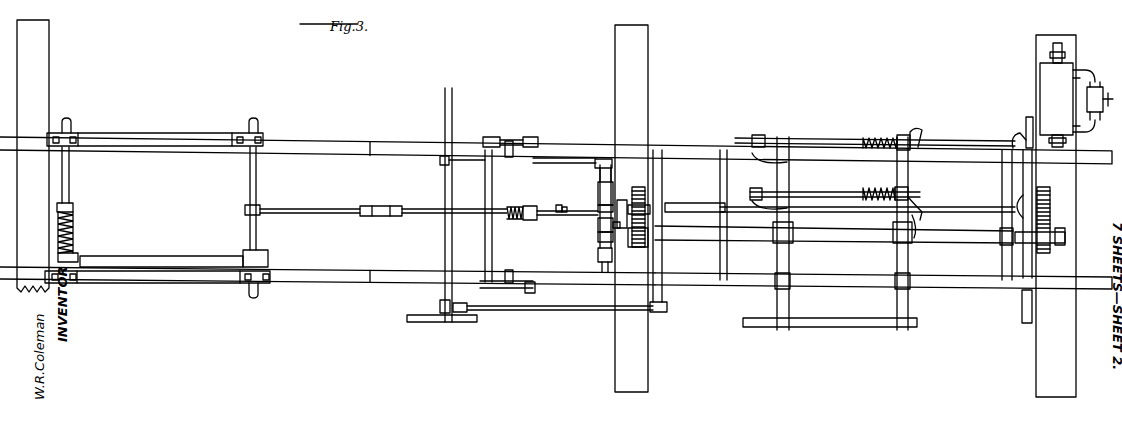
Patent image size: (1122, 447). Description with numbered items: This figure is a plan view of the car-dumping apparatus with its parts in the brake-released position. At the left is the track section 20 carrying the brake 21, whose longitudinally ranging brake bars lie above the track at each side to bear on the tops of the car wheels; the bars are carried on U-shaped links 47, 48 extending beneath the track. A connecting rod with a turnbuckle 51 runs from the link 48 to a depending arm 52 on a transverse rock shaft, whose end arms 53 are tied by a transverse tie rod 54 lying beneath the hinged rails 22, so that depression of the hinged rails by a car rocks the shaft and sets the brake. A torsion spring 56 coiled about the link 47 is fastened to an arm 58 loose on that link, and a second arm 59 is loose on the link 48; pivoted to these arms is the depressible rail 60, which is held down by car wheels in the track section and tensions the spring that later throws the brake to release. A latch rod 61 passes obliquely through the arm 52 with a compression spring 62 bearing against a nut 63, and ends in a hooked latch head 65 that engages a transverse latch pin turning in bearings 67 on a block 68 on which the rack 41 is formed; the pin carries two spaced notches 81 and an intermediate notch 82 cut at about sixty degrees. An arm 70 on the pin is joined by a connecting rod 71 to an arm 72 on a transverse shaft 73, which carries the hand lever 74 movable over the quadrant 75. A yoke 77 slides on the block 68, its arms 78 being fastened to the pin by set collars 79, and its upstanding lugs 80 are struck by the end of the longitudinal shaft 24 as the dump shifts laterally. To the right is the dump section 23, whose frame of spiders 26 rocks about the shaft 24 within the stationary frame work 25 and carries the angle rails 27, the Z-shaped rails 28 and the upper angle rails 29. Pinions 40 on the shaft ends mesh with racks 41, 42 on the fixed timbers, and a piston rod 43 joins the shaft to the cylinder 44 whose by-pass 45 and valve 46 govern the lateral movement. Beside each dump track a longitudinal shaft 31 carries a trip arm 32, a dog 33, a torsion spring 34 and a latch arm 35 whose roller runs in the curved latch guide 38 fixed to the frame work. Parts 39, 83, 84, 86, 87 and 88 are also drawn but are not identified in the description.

The track section 20 is at (311, 147).
The brake 21 is at (165, 137).
The hinged rails 22 is at (383, 143).
The dump section 23 is at (765, 212).
The longitudinal shaft 24 is at (690, 240).
The frame work 25 is at (648, 58).
The spiders 26 is at (777, 254).
The angle rails 27 is at (678, 287).
The double-flanged or Z-shaped rails 28 is at (677, 150).
The additional angle rails 29 is at (782, 137).
The longitudinal shaft 31 is at (815, 142).
The trip arm 32 is at (768, 163).
The dog 33 is at (922, 139).
The torsion spring 34 is at (1014, 137).
The latch arm 35 is at (1052, 214).
The curved latch guide 38 is at (1024, 320).
The spring 39 is at (864, 139).
The pinions 40 is at (638, 248).
The rack 41 is at (640, 187).
The rack 42 is at (1035, 193).
The piston rod 43 is at (1003, 179).
The cylinder 44 is at (1056, 95).
The by-pass 45 is at (1092, 131).
The valve 46 is at (1087, 94).
The U-shaped link 47 is at (73, 193).
The U-shaped link 48 is at (72, 130).
The turnbuckle 51 is at (81, 203).
The depending arm 52 is at (556, 208).
The fixed arms 53 is at (522, 137).
The transverse tie rod 54 is at (485, 232).
The torsion spring 56 is at (75, 229).
The arm 58 is at (90, 253).
The second arm 59 is at (261, 251).
The depressible rail 60 is at (164, 256).
The latch rod 61 is at (560, 203).
The compression spring 62 is at (522, 220).
The nut 63 is at (509, 207).
The latch head 65 is at (592, 213).
The bearings 67 is at (596, 161).
The block or casting 68 is at (614, 180).
The arm 70 is at (606, 163).
The connecting rod 71 is at (549, 158).
The arm 72 is at (440, 161).
The transverse shaft 73 is at (453, 194).
The hand lever 74 is at (440, 307).
The quadrant 75 is at (445, 322).
The yoke 77 is at (649, 207).
The arms 78 is at (598, 191).
The set collars 79 is at (598, 208).
The upstanding lugs 80 is at (622, 250).
The notches 81 is at (612, 226).
The intermediate notch 82 is at (598, 224).
The link 83 is at (460, 303).
The rod 84 is at (576, 311).
The rod 86 is at (605, 263).
The post 87 is at (662, 268).
The block 88 is at (661, 312).